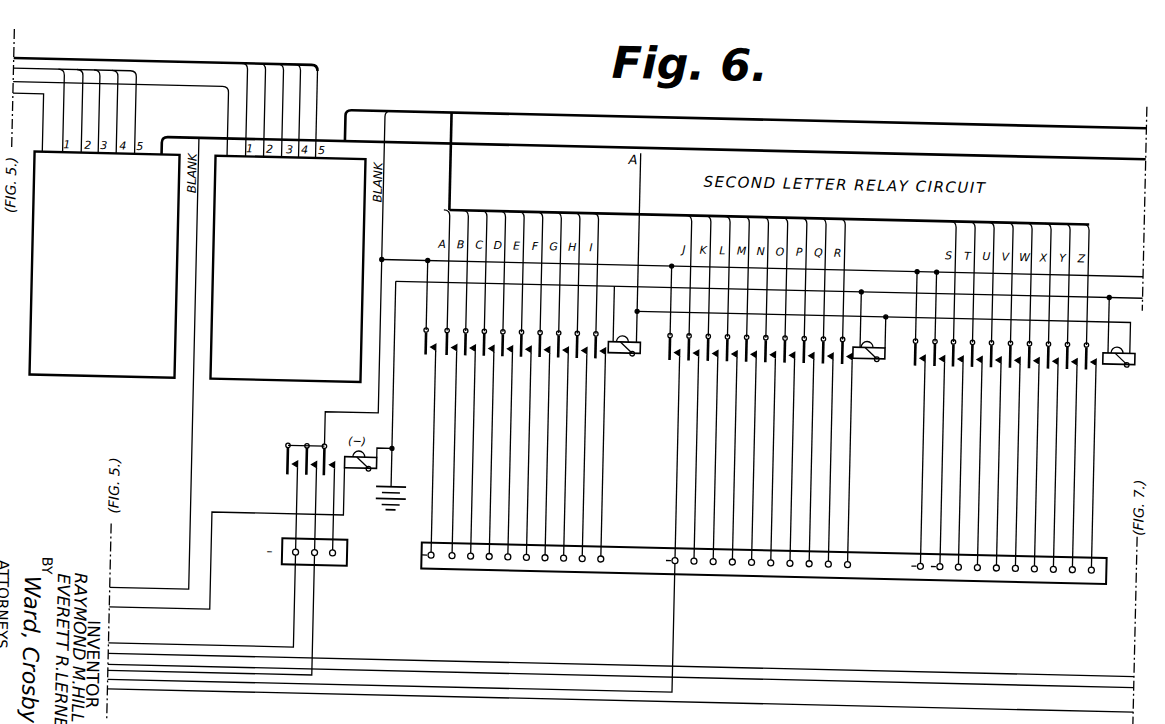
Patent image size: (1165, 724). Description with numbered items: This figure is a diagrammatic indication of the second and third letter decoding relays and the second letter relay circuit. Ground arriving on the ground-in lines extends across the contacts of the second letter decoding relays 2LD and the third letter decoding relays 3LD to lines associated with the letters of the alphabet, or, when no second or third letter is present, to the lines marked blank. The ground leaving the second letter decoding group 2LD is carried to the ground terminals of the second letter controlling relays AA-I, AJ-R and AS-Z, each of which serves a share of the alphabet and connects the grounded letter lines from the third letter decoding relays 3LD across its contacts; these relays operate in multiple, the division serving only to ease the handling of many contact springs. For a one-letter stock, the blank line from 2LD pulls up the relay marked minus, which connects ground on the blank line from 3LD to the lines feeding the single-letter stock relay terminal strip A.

The second letter decoding relays 2LD is at (105, 265).
The third letter decoding relays 3LD is at (287, 269).
The second letter controlling relay for letters A to I AA-I is at (624, 355).
The second letter controlling relay for letters J to R AJ-R is at (868, 360).
The second letter controlling relay for letters S to Z AS-Z is at (1118, 368).
The stock relay A terminal strip A is at (750, 563).